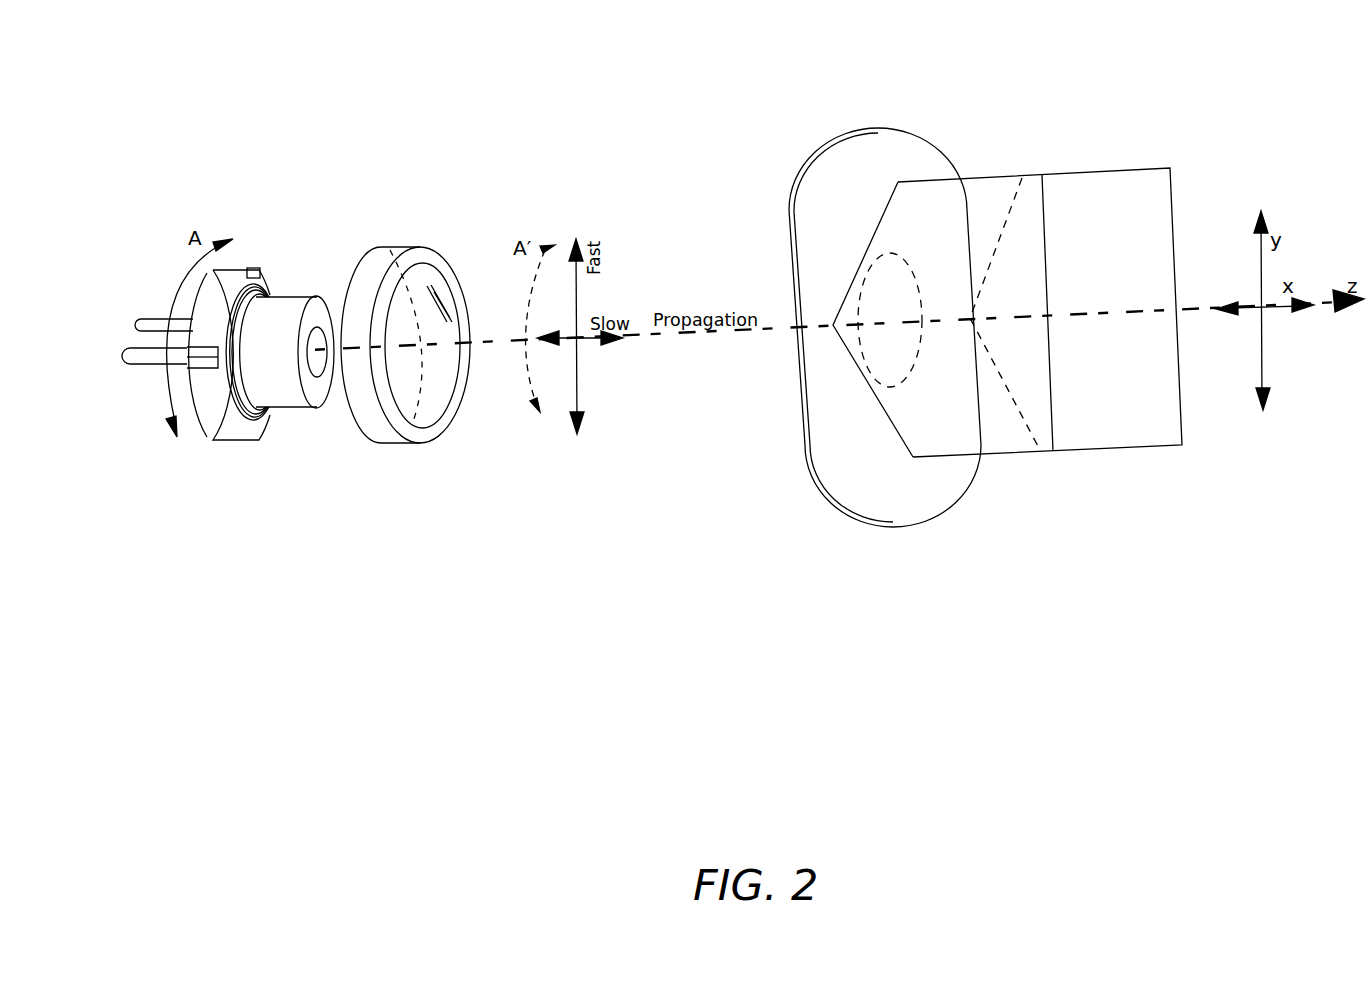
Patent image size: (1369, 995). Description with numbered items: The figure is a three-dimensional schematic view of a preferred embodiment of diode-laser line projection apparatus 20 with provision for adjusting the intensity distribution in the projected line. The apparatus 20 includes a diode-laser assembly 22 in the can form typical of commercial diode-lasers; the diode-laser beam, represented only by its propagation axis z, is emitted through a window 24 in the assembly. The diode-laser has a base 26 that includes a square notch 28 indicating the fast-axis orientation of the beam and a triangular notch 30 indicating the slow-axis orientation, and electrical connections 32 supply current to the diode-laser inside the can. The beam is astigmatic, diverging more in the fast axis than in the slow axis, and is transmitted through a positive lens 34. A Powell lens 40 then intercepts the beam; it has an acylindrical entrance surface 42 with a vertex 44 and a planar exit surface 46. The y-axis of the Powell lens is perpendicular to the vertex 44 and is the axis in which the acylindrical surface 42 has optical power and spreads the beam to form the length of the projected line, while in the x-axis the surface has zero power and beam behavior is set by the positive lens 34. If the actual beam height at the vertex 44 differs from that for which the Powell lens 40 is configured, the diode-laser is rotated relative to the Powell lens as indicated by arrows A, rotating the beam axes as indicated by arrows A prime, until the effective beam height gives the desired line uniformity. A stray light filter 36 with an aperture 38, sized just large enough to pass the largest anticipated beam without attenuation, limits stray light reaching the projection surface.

The diode-laser line projection apparatus 20 is at (890, 737).
The diode-laser assembly 22 is at (312, 264).
The window 24 is at (329, 408).
The base 26 is at (223, 441).
The square notch 28 is at (252, 268).
The triangular notch 30 is at (199, 369).
The electrical connections 32 is at (150, 319).
The positive lens 34 is at (440, 432).
The stray light filter 36 is at (810, 505).
The aperture 38 is at (913, 378).
The Powell lens 40 is at (953, 328).
The acylindrical entrance surface 42 is at (887, 418).
The vertex 44 is at (834, 326).
The planar exit surface 46 is at (1118, 423).